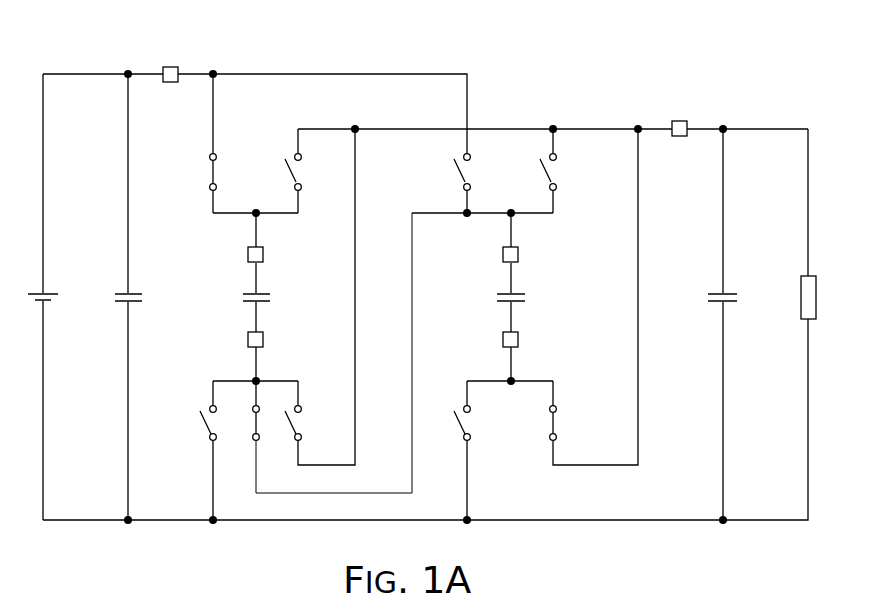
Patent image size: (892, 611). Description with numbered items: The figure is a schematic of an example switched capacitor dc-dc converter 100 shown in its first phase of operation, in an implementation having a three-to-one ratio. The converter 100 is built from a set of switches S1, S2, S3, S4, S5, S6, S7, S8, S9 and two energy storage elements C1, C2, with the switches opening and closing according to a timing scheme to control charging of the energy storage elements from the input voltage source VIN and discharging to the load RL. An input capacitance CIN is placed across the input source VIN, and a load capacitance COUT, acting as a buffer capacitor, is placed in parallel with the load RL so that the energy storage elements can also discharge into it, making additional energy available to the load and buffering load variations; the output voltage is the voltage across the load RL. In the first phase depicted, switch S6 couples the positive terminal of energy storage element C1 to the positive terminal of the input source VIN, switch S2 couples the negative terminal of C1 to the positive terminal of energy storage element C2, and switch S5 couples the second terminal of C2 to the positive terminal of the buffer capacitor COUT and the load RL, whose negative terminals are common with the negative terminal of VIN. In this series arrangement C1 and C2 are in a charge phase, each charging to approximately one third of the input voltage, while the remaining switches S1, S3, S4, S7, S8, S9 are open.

The dc-dc converter 100 is at (682, 54).
The input voltage source VIN is at (64, 299).
The input capacitance CIN is at (149, 299).
The load capacitance COUT is at (750, 299).
The load RL is at (826, 297).
The energy storage element C1 is at (277, 296).
The energy storage element C2 is at (532, 296).
The switch S1 is at (222, 410).
The switch S2 is at (269, 410).
The switch S3 is at (308, 410).
The switch S4 is at (477, 410).
The switch S5 is at (569, 410).
The switch S6 is at (229, 183).
The switch S7 is at (307, 171).
The switch S8 is at (477, 183).
The switch S9 is at (563, 171).